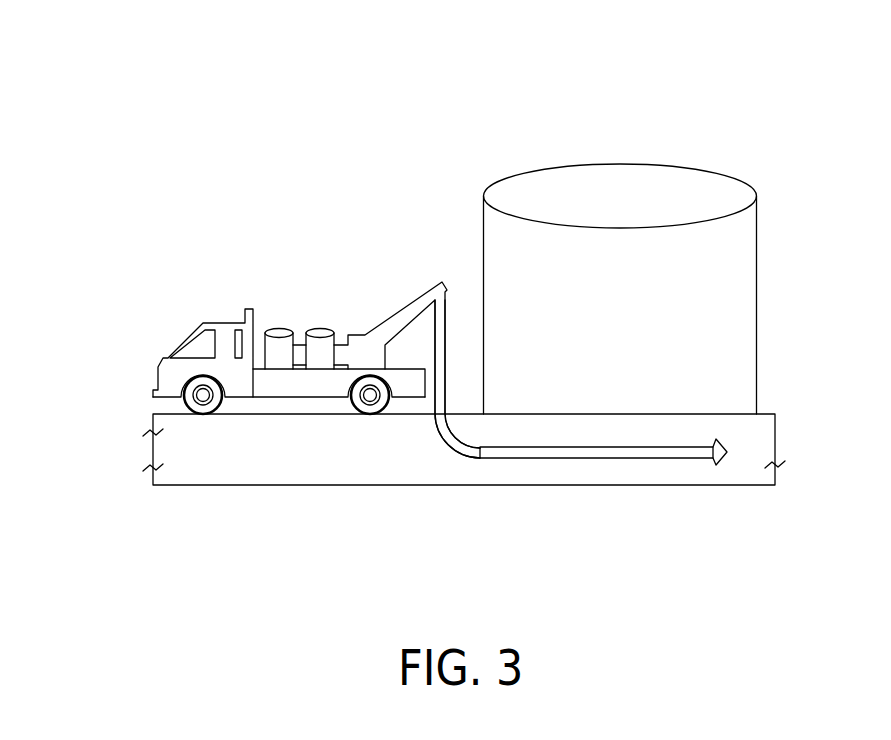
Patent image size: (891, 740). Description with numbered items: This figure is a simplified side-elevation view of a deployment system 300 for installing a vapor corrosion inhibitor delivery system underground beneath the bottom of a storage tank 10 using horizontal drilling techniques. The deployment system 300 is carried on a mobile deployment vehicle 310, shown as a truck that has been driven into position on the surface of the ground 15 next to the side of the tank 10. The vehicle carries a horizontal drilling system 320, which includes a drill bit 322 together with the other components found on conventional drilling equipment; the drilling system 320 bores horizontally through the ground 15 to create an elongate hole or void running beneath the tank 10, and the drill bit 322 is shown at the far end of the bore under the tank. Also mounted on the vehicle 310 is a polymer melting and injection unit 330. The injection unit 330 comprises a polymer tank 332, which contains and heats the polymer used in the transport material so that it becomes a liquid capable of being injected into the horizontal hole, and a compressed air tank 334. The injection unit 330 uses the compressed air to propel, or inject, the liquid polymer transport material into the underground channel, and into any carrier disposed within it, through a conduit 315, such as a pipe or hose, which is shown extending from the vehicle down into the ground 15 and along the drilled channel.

The deployment system 300 is at (721, 97).
The tank 10 is at (612, 294).
The ground 15 is at (335, 454).
The mobile deployment vehicle 310 is at (157, 297).
The conduit 315 is at (436, 403).
The horizontal drilling system 320 is at (566, 480).
The drill bit 322 is at (727, 443).
The polymer melting and injection unit 330 is at (340, 316).
The polymer tank 332 is at (318, 329).
The compressed air tank 334 is at (274, 329).